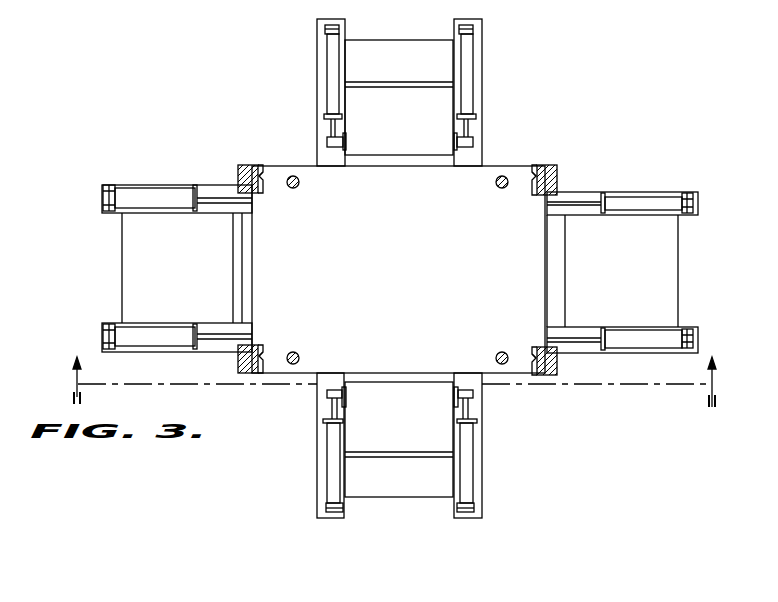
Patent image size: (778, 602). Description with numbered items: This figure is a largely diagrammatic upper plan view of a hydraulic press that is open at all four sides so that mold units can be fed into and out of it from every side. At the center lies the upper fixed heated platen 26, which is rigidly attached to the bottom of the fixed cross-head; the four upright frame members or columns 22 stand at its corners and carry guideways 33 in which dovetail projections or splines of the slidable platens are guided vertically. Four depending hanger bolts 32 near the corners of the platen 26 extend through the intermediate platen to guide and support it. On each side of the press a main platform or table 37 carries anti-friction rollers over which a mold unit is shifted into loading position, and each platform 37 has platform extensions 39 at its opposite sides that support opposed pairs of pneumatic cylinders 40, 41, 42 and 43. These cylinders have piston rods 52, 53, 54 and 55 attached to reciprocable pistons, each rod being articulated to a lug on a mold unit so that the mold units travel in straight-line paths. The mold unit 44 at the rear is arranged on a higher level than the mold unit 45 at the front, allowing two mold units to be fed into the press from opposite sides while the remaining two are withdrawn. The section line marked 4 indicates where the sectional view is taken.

The section line 4- 4 is at (396, 367).
The upright frame member 22 is at (244, 165).
The upper fixed heated platen 26 is at (432, 291).
The hanger bolt 32 is at (297, 189).
The guideway 33 is at (262, 173).
The main platform 37 is at (128, 240).
The platform extension 39 is at (318, 55).
The pneumatic cylinder 40 is at (330, 487).
The pneumatic cylinder 41 is at (330, 73).
The pneumatic cylinder 42 is at (628, 193).
The pneumatic cylinder 43 is at (152, 190).
The mold unit 44 is at (417, 128).
The mold unit 45 is at (411, 432).
The piston rod 52 is at (332, 408).
The piston rod 53 is at (332, 128).
The piston rod 54 is at (570, 201).
The piston rod 55 is at (212, 201).